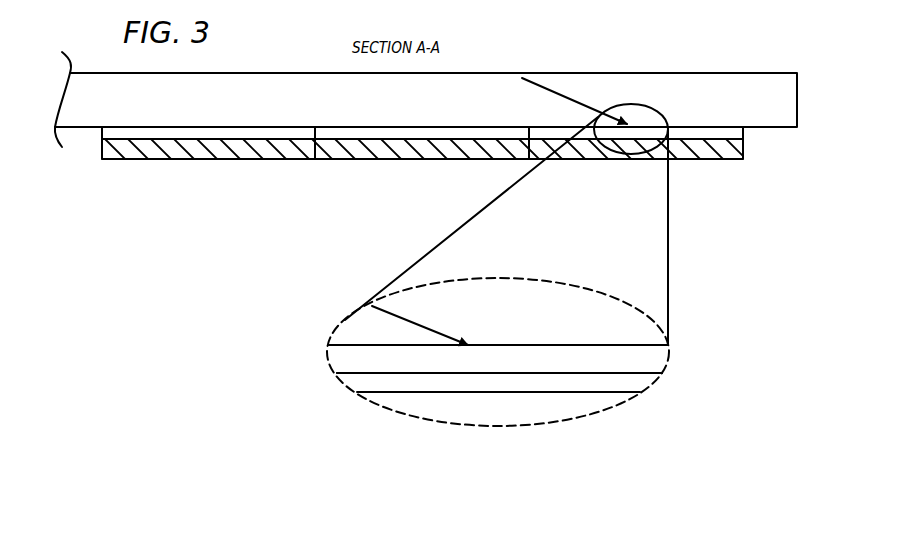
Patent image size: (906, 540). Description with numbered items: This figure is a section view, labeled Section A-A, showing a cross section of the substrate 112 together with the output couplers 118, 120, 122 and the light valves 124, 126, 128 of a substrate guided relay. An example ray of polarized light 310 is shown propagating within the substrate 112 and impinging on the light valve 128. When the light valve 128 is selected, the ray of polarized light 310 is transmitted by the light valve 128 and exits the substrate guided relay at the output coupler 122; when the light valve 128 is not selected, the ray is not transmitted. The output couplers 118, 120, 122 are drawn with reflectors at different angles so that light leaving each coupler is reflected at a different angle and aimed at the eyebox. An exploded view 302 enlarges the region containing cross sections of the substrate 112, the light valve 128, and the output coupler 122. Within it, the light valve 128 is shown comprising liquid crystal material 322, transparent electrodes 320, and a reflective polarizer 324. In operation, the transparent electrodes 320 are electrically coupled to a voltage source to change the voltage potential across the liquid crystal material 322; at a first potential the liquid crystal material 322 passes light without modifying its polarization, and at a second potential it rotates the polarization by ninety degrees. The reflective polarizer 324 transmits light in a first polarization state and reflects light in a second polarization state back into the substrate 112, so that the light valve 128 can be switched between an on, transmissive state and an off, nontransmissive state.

The substrate 112 is at (675, 73).
The output coupler 118 is at (150, 162).
The output coupler 120 is at (327, 162).
The output coupler 122 is at (735, 162).
The light valve 124 is at (169, 133).
The light valve 126 is at (323, 132).
The light valve 128 is at (723, 133).
The exploded view 302 is at (557, 435).
The polarized light 310 is at (547, 90).
The transparent electrodes 320 is at (660, 372).
The liquid crystal material 322 is at (498, 359).
The reflective polarizer 324 is at (636, 386).